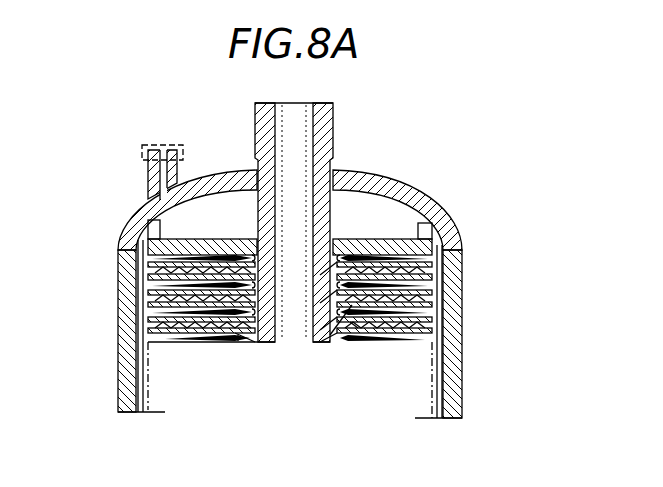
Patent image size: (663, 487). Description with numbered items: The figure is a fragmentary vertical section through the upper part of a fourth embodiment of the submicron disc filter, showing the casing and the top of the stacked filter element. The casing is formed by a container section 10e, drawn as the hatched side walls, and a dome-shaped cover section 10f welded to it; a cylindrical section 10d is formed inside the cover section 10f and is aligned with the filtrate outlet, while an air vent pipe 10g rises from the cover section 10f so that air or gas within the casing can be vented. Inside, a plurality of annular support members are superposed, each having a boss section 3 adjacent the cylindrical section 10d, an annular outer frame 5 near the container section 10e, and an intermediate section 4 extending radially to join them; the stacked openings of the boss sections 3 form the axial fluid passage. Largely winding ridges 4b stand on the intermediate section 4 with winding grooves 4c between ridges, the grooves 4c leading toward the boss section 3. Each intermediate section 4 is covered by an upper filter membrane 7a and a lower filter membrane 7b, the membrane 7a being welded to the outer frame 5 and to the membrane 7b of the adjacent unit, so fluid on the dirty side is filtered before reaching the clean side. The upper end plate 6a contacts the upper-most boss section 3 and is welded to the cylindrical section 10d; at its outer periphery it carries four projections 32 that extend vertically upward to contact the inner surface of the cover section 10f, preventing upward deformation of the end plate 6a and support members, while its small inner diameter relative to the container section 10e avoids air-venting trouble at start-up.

The boss section 3 is at (262, 343).
The intermediate section 4 is at (172, 264).
The largely winding ridge 4b is at (356, 326).
The winding groove 4c is at (238, 342).
The outer frame 5 is at (432, 334).
The upper end plate 6a is at (384, 247).
The upper filter membrane 7a is at (160, 238).
The lower filter membrane 7b is at (412, 290).
The cylindrical section 10d is at (263, 196).
The container section 10e is at (128, 356).
The cover section 10f is at (362, 246).
The air vent pipe 10g is at (147, 191).
The projection 32 is at (438, 233).